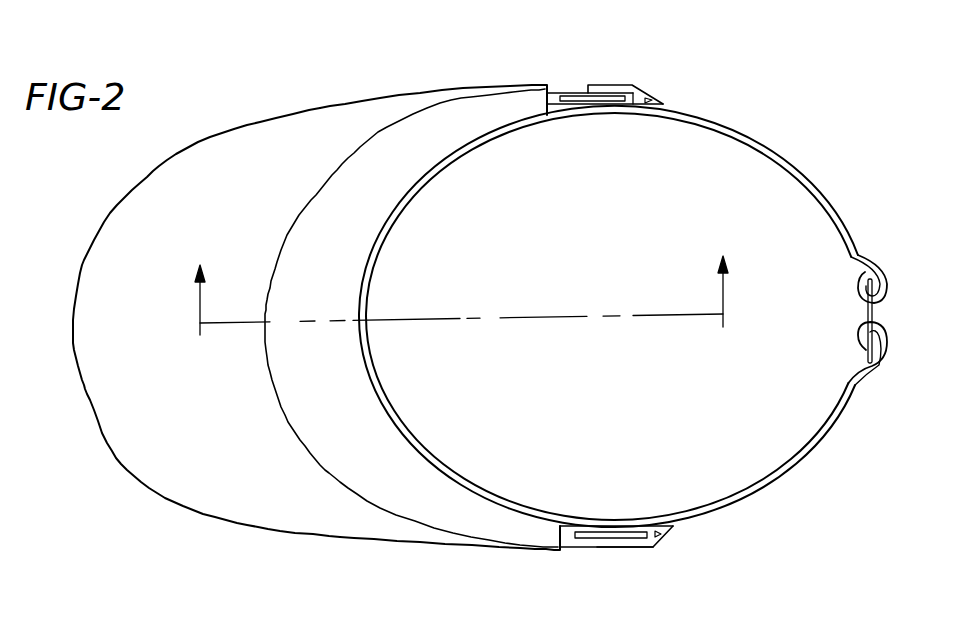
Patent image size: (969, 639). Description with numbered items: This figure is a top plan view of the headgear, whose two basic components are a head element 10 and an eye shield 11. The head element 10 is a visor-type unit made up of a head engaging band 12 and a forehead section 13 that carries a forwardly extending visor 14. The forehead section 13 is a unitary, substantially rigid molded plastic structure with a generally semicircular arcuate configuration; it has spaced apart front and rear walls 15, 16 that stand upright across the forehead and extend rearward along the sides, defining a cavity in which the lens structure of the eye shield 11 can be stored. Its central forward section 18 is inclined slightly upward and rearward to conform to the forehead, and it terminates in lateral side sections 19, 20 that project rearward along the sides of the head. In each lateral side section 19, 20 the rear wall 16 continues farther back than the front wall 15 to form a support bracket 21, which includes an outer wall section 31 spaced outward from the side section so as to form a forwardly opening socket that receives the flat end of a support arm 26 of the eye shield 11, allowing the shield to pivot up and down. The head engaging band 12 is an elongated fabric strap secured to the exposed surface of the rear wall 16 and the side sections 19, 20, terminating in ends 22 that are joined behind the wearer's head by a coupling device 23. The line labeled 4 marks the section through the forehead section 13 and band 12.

The section line 4- 4 is at (458, 314).
The head element 10 is at (450, 570).
The eye shield 11 is at (603, 559).
The head engaging band 12 is at (608, 306).
The forehead section 13 is at (356, 545).
The visor 14 is at (206, 322).
The front wall 15 is at (199, 242).
The rear wall 16 is at (603, 317).
The central forward section 18 is at (389, 363).
The lateral side section 19 is at (433, 73).
The lateral side section 20 is at (528, 585).
The support bracket 21 is at (685, 319).
The ends 22 is at (821, 284).
The coupling device 23 is at (827, 321).
The support arms 26 is at (610, 329).
The outer wall section 31 is at (662, 323).